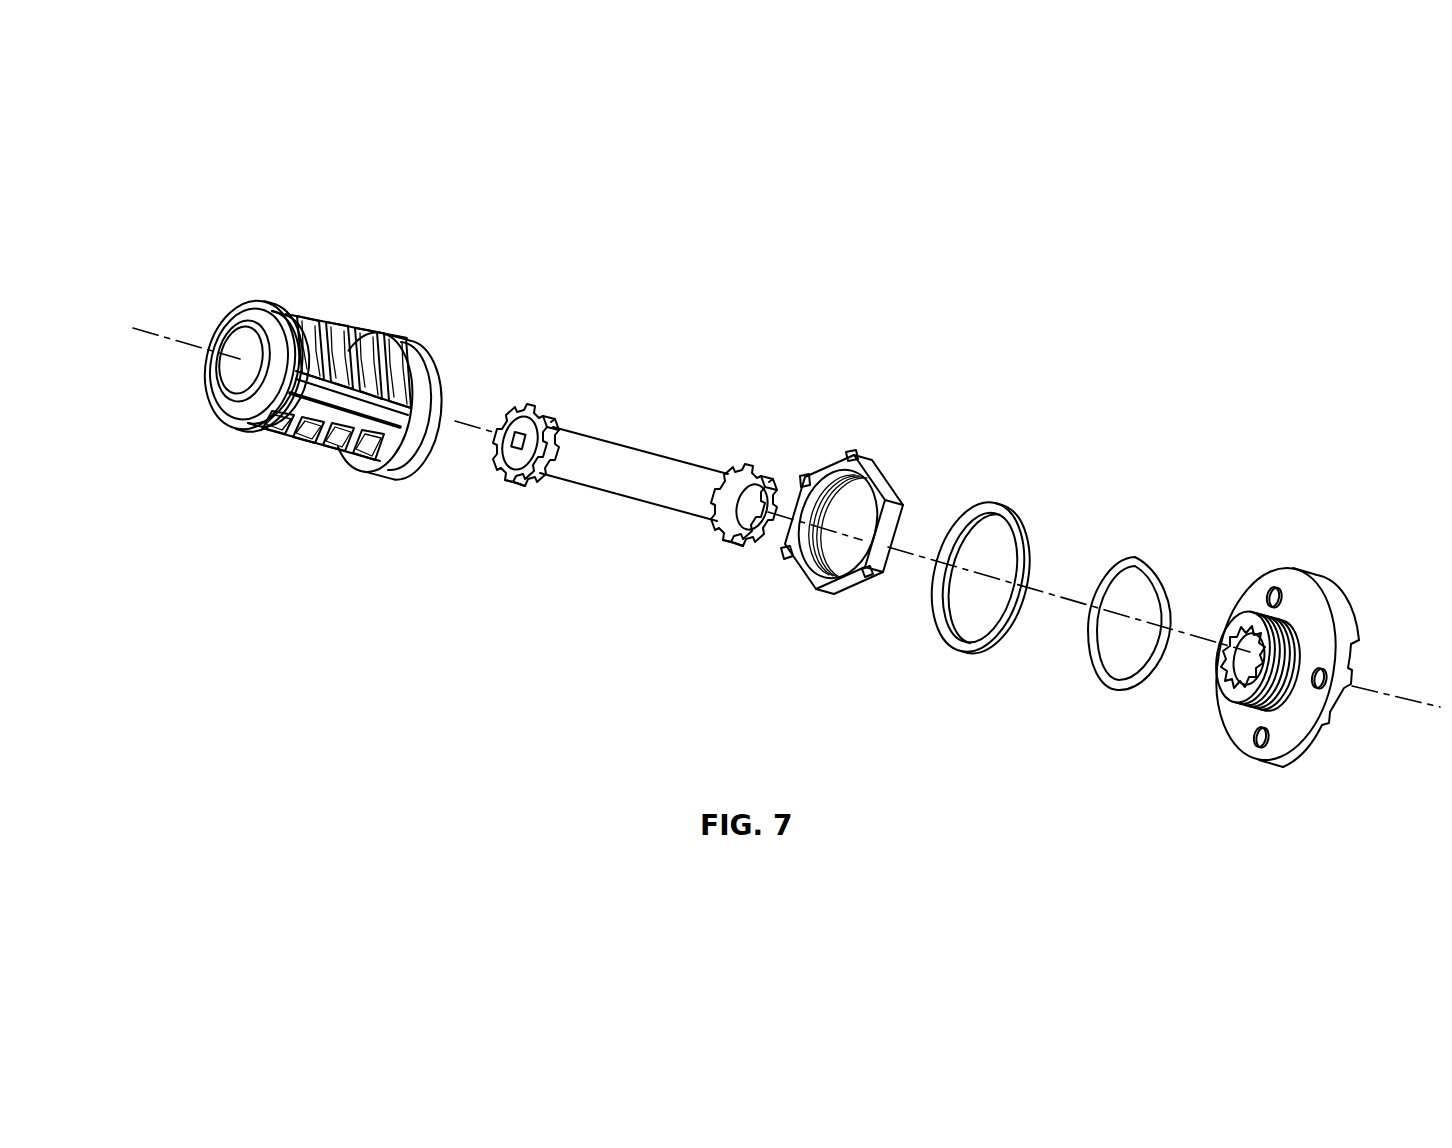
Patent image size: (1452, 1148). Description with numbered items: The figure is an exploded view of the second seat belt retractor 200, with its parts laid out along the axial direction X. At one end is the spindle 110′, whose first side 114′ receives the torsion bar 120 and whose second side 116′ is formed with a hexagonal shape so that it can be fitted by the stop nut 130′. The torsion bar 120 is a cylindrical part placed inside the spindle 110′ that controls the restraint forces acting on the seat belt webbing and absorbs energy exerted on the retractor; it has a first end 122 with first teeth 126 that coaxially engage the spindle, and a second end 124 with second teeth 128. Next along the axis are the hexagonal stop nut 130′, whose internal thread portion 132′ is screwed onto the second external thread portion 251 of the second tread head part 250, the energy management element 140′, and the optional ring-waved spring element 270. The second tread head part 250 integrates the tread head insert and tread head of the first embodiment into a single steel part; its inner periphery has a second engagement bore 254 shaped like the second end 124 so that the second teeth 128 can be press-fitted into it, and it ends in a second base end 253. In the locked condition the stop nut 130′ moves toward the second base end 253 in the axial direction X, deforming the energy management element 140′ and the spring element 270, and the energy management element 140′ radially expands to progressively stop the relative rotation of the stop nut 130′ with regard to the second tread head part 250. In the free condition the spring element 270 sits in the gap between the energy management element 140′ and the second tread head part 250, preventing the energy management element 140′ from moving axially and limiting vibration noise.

The second seat belt retractor 200 is at (786, 437).
The axial direction X is at (145, 328).
The spindle 110′ is at (364, 381).
The front cap of cartridge body 114′ is at (238, 420).
The second side of the spindle 116′ is at (388, 478).
The torsion bar 120 is at (641, 462).
The first end of the torsion bar 122 is at (520, 405).
The second end of the torsion bar 124 is at (749, 472).
The first teeth 126 is at (517, 484).
The second teeth 128 is at (713, 542).
The stop nut 130′ is at (857, 518).
The internal thread portion of the stop nut 132′ is at (803, 568).
The energy management element 140′ is at (1005, 503).
The spring element 270 is at (1150, 552).
The second tread head part 250 is at (1280, 653).
The second external thread portion 251 is at (1257, 707).
The second base end of the second tread head part 253 is at (1298, 717).
The second engagement bore 254 is at (1253, 670).